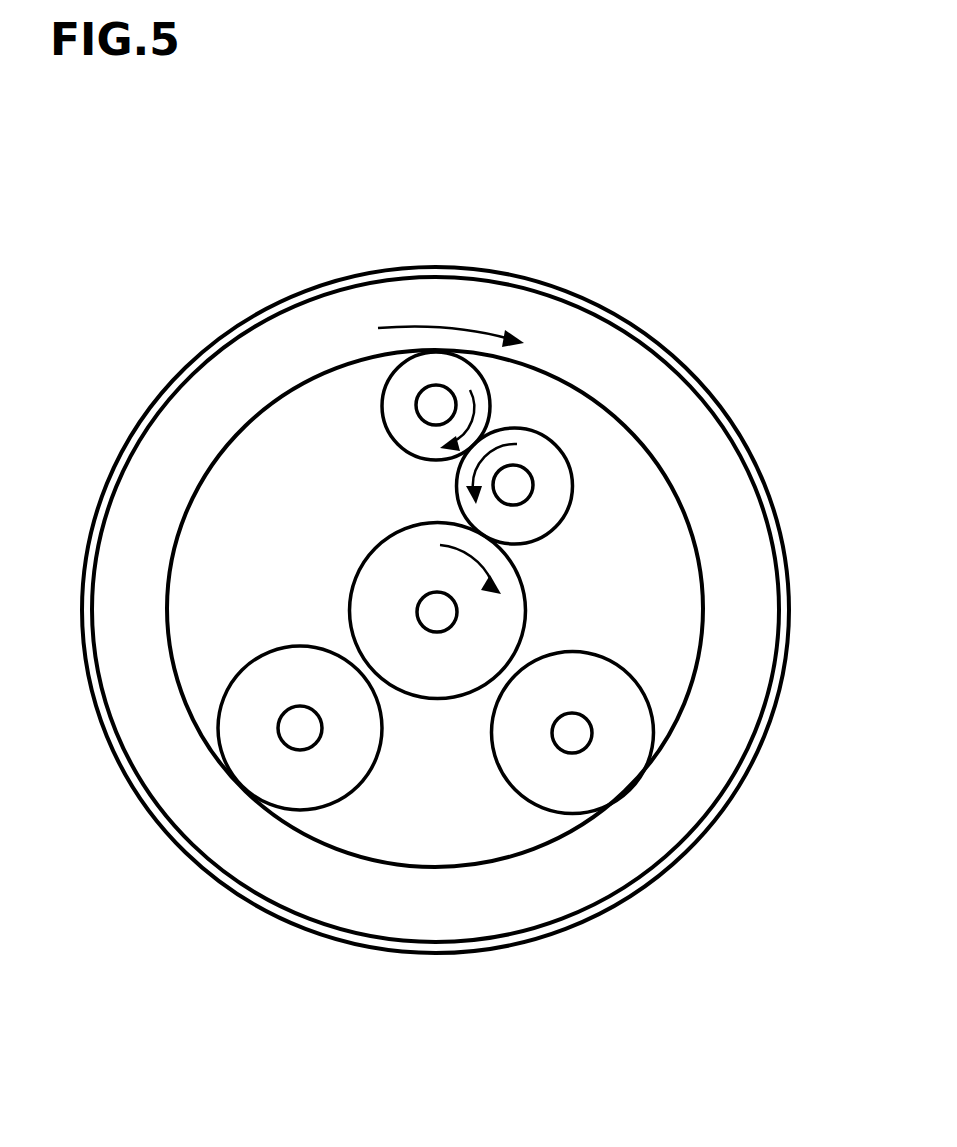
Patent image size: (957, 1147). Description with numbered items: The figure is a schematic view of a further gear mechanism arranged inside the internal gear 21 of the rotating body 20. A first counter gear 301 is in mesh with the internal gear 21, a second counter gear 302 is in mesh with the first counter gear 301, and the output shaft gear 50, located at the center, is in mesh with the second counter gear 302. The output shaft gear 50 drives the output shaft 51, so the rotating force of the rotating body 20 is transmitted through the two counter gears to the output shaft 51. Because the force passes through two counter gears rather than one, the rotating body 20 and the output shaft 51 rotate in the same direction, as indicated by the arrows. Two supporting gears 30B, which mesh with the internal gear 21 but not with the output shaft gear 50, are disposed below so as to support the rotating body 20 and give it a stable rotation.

The rotating body 20 is at (657, 389).
The internal gear 21 is at (692, 546).
The output shaft gear 50 is at (368, 572).
The output shaft 51 is at (415, 617).
The first counter gear 301 is at (420, 368).
The second counter gear 302 is at (535, 447).
The supporting gears 30B is at (260, 772).